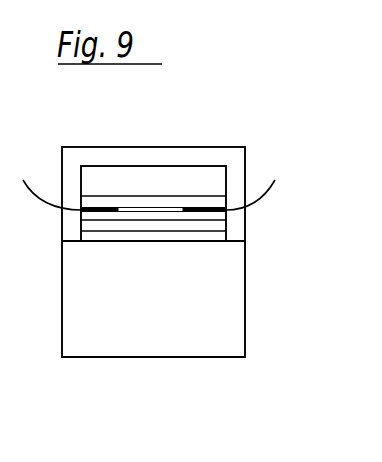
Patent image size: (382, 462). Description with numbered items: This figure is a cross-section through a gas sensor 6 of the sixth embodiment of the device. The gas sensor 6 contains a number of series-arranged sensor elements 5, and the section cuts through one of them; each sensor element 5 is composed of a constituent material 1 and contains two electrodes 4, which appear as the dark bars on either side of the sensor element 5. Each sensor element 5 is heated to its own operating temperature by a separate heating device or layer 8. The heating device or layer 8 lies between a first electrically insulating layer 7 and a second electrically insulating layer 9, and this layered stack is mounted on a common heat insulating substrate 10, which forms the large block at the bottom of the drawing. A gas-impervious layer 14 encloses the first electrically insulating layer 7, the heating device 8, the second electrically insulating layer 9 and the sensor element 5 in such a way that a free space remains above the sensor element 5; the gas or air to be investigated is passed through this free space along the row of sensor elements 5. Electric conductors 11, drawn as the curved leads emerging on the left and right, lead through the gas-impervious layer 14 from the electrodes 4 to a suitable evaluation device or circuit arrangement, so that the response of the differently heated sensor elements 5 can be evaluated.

The gas-impervious layer 14 is at (146, 154).
The sensor element 5 is at (160, 190).
The constituent material 1 is at (215, 197).
The electrode 4 is at (93, 211).
The first electrically insulating layer 7 is at (163, 214).
The heating device or layer 8 is at (133, 222).
The second electrically insulating layer 9 is at (100, 232).
The electric conductor 11 is at (148, 182).
The heat insulating substrate 10 is at (231, 308).
The gas sensor 6 is at (159, 457).